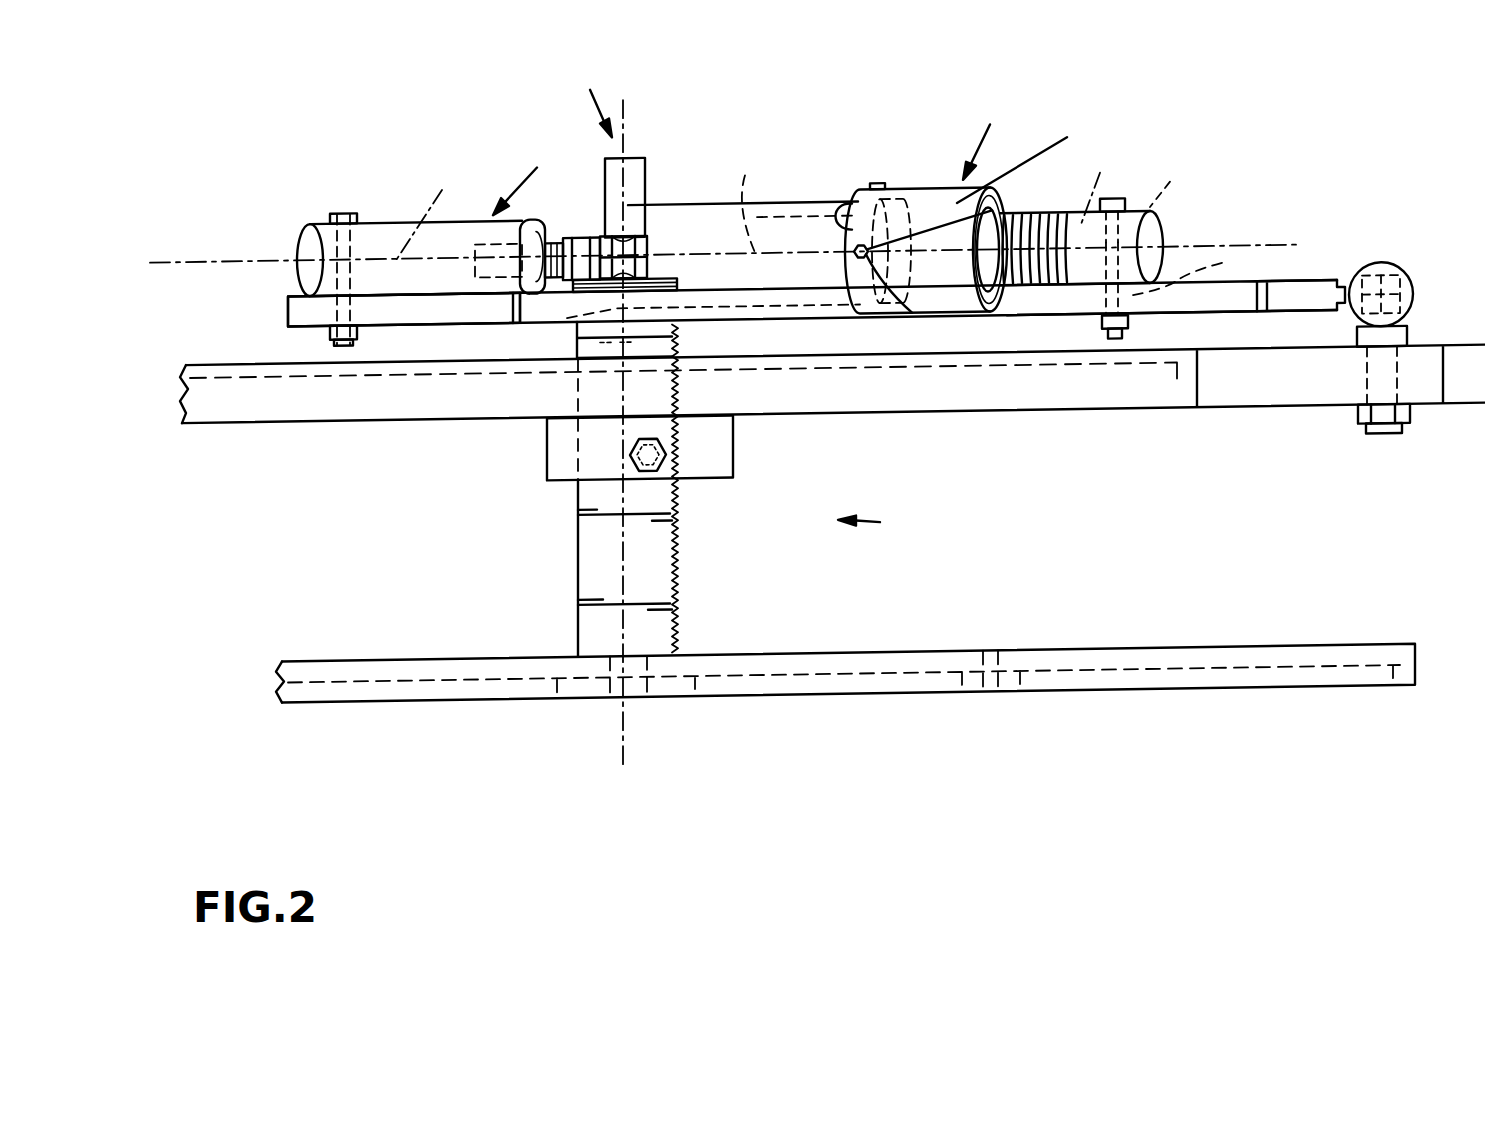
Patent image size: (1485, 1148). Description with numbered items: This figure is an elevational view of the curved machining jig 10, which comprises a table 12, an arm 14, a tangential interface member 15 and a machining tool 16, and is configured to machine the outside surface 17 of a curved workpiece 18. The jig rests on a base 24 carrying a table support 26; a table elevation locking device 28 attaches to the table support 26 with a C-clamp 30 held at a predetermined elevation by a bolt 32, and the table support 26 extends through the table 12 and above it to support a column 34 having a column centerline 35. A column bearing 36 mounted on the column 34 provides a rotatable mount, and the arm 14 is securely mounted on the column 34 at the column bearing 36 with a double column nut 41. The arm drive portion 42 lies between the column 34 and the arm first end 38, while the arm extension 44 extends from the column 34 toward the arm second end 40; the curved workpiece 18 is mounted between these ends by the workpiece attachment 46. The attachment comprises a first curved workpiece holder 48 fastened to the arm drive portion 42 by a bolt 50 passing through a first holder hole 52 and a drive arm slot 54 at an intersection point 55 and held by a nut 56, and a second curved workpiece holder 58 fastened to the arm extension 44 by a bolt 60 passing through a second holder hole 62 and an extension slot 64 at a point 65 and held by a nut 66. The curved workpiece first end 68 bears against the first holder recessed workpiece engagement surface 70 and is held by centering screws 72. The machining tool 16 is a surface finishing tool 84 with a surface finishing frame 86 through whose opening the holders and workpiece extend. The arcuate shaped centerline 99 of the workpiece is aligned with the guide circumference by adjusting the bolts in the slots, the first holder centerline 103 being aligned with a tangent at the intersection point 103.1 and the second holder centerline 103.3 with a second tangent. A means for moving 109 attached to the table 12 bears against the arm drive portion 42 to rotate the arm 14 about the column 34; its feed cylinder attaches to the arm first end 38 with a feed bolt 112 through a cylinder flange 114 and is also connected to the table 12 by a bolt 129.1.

The curved machining jig 10 is at (883, 524).
The table 12 is at (1162, 418).
The arm 14 is at (793, 312).
The tangential interface member 15 is at (1103, 234).
The machining tool 16 is at (585, 100).
The outside surface 17 is at (757, 229).
The curved workpiece 18 is at (788, 214).
The base 24 is at (822, 666).
The table support 26 is at (588, 557).
The table elevation locking device 28 is at (560, 471).
The C-clamp 30 is at (720, 444).
The bolt 32 is at (707, 468).
The column 34 is at (560, 338).
The column centerline 35 is at (624, 150).
The column bearing 36 is at (677, 292).
The arm first end 38 is at (1303, 307).
The arm second end 40 is at (290, 323).
The double column nut 41 is at (648, 255).
The arm drive portion 42 is at (1023, 316).
The arm extension 44 is at (472, 332).
The workpiece attachment 46 is at (761, 148).
The first curved workpiece holder 48 is at (960, 215).
The bolt 50 is at (1150, 300).
The first holder hole 52 is at (1179, 185).
The drive arm slot 54 is at (1193, 269).
The intersection point 55 is at (1097, 240).
The nut 56 is at (1127, 343).
The second curved workpiece holder 58 is at (392, 240).
The bolt 60 is at (335, 295).
The second holder hole 62 is at (345, 213).
The extension slot 64 is at (432, 320).
The point 65 is at (346, 344).
The nut 66 is at (330, 341).
The curved workpiece first end 68 is at (903, 204).
The first holder recessed workpiece engagement surface 70 is at (833, 192).
The centering screws 72 is at (878, 198).
The surface finishing tool 84 is at (605, 193).
The surface finishing frame 86 is at (645, 188).
The arcuate shaped centerline 99 is at (755, 202).
The centerline 103 is at (1113, 227).
The intersection point 103.1 is at (1037, 154).
The centerline 103.3 is at (441, 209).
The means for moving 109 is at (1353, 343).
The feed bolt 112 is at (1405, 344).
The cylinder flange 114 is at (1375, 312).
The bolt 129.1 is at (1380, 452).